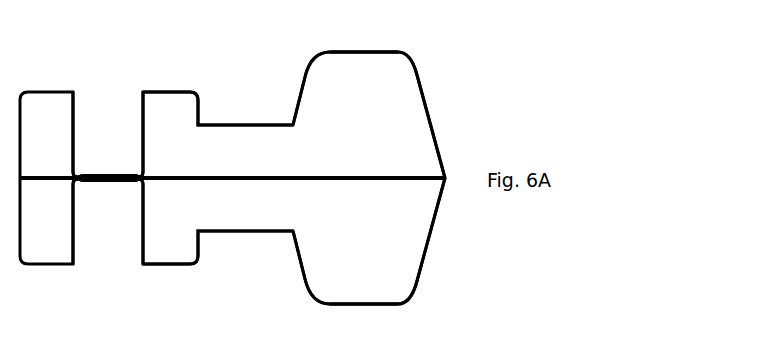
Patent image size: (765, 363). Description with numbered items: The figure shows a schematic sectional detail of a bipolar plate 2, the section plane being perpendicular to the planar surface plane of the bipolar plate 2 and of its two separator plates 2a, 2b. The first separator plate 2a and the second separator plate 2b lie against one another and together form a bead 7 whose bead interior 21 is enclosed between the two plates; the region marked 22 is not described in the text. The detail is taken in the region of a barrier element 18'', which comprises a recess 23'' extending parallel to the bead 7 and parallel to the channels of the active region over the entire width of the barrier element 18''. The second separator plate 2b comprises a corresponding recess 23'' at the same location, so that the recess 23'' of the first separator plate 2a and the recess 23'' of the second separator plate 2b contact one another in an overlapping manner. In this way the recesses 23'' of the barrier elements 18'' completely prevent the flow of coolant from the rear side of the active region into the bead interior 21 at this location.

The bipolar plate 2 is at (252, 178).
The first separator plate 2a is at (420, 80).
The second separator plate 2b is at (428, 256).
The bead 7 is at (367, 51).
The bead interior 21 is at (369, 178).
The shaft region 22 is at (218, 178).
The barrier element 18'' is at (141, 165).
The recess 23'' is at (121, 178).